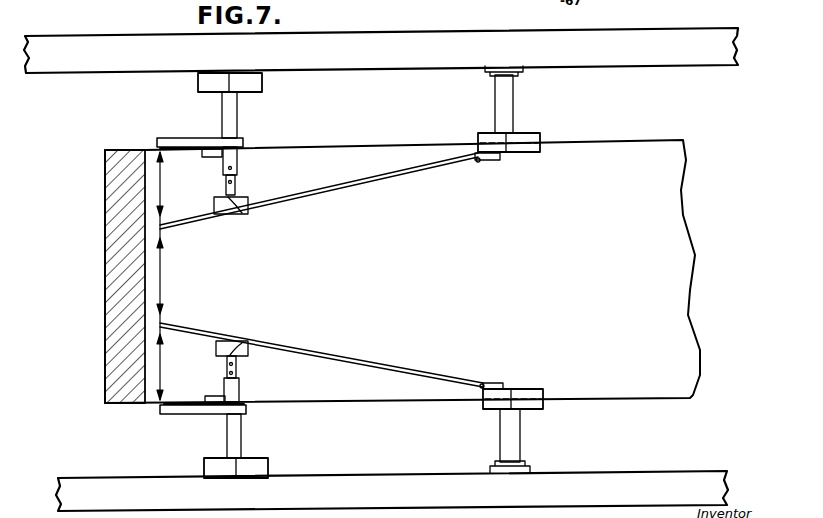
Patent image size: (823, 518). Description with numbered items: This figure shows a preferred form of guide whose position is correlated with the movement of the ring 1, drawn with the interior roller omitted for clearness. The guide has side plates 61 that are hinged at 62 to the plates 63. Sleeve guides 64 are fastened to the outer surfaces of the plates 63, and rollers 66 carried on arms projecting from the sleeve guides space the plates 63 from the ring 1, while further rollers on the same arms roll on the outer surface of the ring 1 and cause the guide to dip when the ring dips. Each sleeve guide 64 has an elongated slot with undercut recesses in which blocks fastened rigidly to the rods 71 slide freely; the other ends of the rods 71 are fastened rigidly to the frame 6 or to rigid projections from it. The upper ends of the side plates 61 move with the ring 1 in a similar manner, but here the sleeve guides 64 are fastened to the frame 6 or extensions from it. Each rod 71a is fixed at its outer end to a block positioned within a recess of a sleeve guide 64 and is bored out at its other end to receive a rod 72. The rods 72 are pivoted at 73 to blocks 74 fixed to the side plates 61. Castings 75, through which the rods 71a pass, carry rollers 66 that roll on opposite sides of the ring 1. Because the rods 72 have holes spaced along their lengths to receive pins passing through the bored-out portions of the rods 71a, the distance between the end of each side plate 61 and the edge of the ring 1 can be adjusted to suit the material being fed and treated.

The ring 1 is at (118, 278).
The frame 6 is at (548, 66).
The side plates 61 is at (363, 181).
The hinge 62 is at (478, 162).
The plates 63 is at (525, 152).
The sleeve guides 64 is at (262, 86).
The rollers 66 is at (222, 155).
The rods 71 is at (512, 110).
The rods 71a is at (237, 116).
The rods 72 is at (238, 183).
The pivot 73 is at (234, 204).
The blocks 74 is at (220, 205).
The castings 75 is at (205, 139).